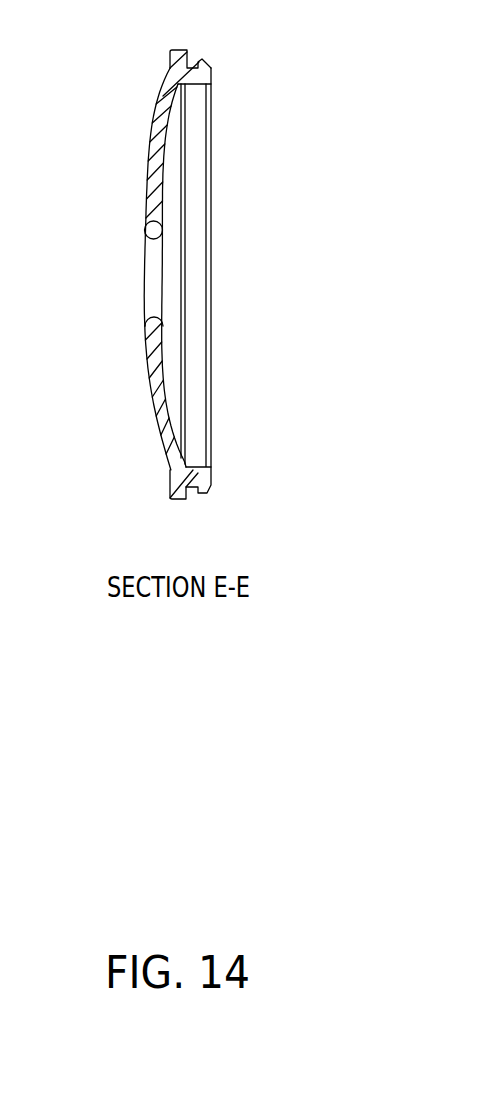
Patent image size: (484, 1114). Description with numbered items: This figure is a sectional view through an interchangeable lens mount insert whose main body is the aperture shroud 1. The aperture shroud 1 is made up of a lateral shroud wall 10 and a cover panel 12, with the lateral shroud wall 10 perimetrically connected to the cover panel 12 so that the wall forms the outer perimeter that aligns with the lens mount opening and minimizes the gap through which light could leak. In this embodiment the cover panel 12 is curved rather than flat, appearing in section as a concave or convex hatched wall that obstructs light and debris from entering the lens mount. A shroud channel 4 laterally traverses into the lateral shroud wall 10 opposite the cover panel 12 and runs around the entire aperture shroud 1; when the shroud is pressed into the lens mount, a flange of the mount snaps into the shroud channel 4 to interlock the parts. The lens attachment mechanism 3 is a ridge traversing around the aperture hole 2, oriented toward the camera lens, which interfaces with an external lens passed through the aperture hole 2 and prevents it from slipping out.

The aperture shroud 1 is at (352, 163).
The aperture hole 2 is at (93, 275).
The lens attachment mechanism 3 is at (157, 263).
The shroud channel 4 is at (193, 40).
The lateral shroud wall 10 is at (199, 119).
The cover panel 12 is at (157, 393).